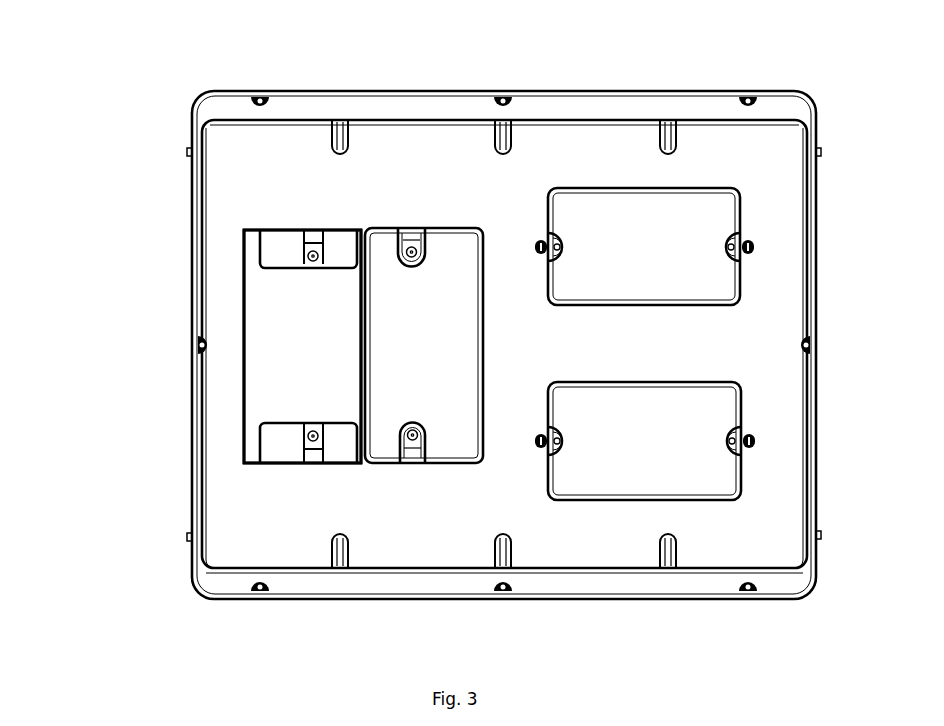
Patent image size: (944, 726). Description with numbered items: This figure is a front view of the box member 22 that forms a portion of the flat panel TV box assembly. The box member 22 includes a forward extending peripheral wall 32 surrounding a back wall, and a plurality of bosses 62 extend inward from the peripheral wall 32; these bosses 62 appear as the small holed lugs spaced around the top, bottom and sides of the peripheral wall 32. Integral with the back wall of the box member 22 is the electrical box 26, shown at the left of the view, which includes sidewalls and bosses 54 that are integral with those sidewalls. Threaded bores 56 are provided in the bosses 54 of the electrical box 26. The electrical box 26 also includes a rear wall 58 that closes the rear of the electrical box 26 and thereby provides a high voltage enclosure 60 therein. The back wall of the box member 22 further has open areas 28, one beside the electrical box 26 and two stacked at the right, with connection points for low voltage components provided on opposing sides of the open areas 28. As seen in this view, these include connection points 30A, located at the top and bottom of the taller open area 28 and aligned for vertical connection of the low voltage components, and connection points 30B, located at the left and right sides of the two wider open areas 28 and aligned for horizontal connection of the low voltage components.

The box member 22 is at (473, 329).
The electrical box 26 is at (243, 256).
The open areas 28 is at (553, 344).
The connection points 30A is at (422, 264).
The connection points 30B is at (727, 239).
The peripheral wall 32 is at (813, 242).
The bosses 54 is at (304, 258).
The threaded bores 56 is at (318, 256).
The rear wall 58 is at (302, 346).
The high voltage enclosure 60 is at (270, 372).
The bosses 62 is at (503, 96).